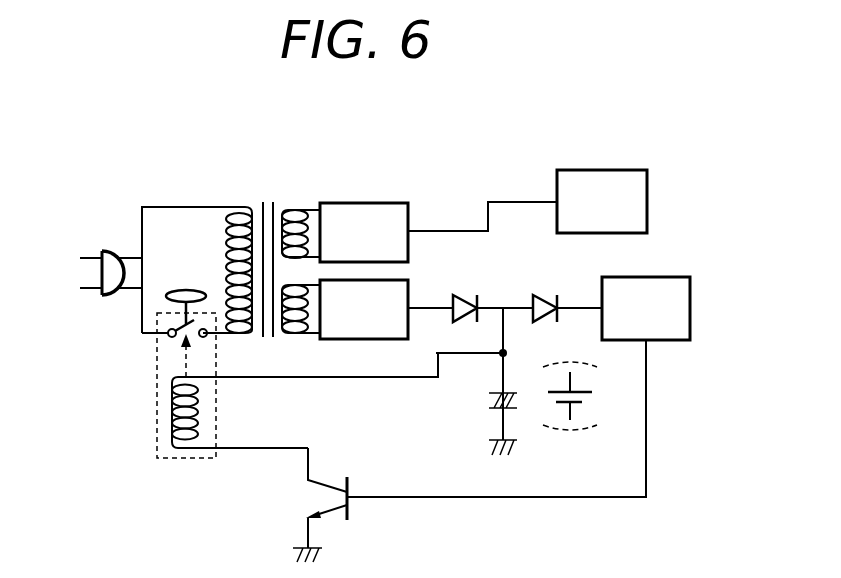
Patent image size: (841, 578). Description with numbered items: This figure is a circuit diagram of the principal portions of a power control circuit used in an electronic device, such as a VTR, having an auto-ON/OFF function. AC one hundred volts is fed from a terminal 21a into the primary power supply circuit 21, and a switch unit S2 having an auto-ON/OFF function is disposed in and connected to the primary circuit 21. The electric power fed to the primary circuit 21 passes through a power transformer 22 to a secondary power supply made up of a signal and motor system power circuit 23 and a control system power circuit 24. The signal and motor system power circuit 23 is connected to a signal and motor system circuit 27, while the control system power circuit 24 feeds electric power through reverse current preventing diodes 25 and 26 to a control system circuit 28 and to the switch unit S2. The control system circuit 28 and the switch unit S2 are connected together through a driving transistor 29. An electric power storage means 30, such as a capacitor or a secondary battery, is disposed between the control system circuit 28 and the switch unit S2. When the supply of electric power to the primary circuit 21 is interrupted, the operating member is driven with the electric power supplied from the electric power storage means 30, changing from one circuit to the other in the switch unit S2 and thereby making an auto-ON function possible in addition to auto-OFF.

The primary power supply circuit 21 is at (160, 192).
The terminal 21a is at (113, 252).
The power transformer 22 is at (262, 198).
The signal and motor system power circuit 23 is at (357, 208).
The control system power circuit 24 is at (395, 320).
The reverse current preventing diode 25 is at (471, 296).
The reverse current preventing diode 26 is at (545, 296).
The signal and motor system circuit 27 is at (595, 187).
The control system circuit 28 is at (660, 290).
The driving transistor 29 is at (300, 515).
The electric power storage means 30 is at (500, 411).
The switch unit S2 is at (157, 372).